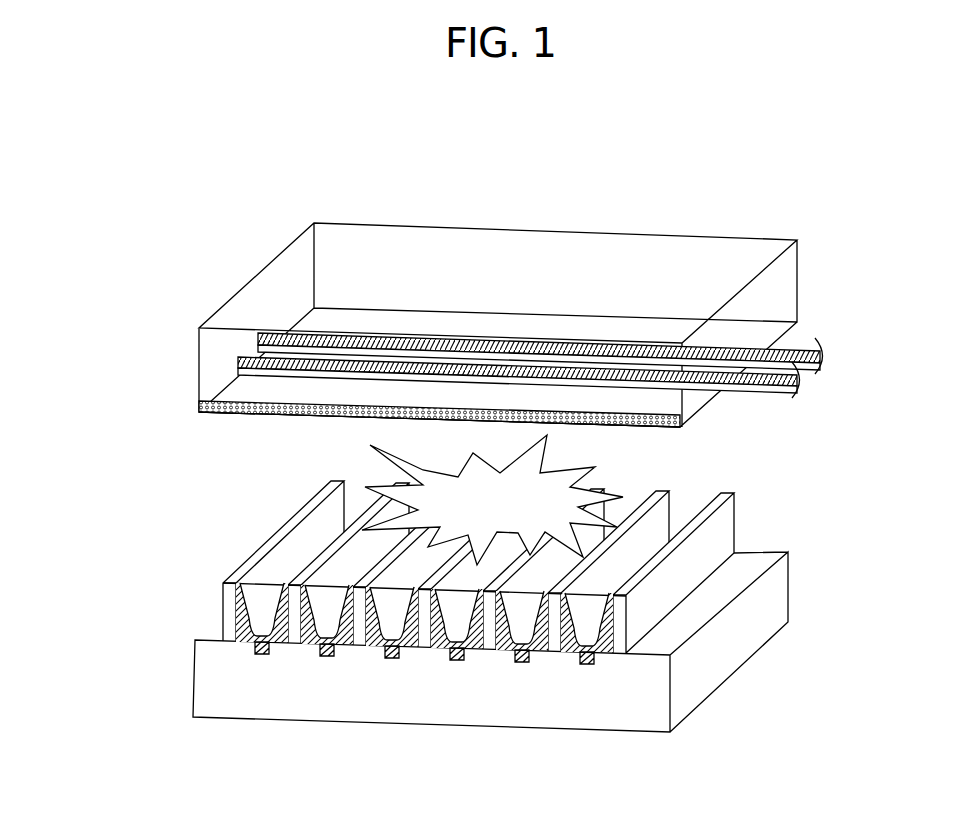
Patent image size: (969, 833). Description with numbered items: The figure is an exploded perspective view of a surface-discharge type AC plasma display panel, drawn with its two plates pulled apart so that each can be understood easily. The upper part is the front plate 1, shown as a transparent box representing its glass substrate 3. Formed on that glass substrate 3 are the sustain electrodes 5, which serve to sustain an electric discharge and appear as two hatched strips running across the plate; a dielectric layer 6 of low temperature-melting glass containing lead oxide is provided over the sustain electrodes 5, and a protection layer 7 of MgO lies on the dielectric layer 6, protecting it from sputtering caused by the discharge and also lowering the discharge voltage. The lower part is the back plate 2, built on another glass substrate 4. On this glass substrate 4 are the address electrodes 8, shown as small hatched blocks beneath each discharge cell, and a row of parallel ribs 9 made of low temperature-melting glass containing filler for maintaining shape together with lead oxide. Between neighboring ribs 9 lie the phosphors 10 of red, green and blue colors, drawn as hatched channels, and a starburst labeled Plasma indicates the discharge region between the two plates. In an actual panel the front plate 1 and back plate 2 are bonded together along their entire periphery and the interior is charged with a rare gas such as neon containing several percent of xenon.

The front plate 1 is at (180, 205).
The back plate 2 is at (168, 595).
The glass substrate 3 is at (497, 255).
The glass substrate 4 is at (723, 643).
The sustain electrodes 5 is at (770, 347).
The dielectric layer 6 is at (200, 405).
The protection layer 7 is at (282, 418).
The address electrodes 8 is at (327, 653).
The ribs 9 is at (738, 522).
The phosphors 10 is at (565, 600).